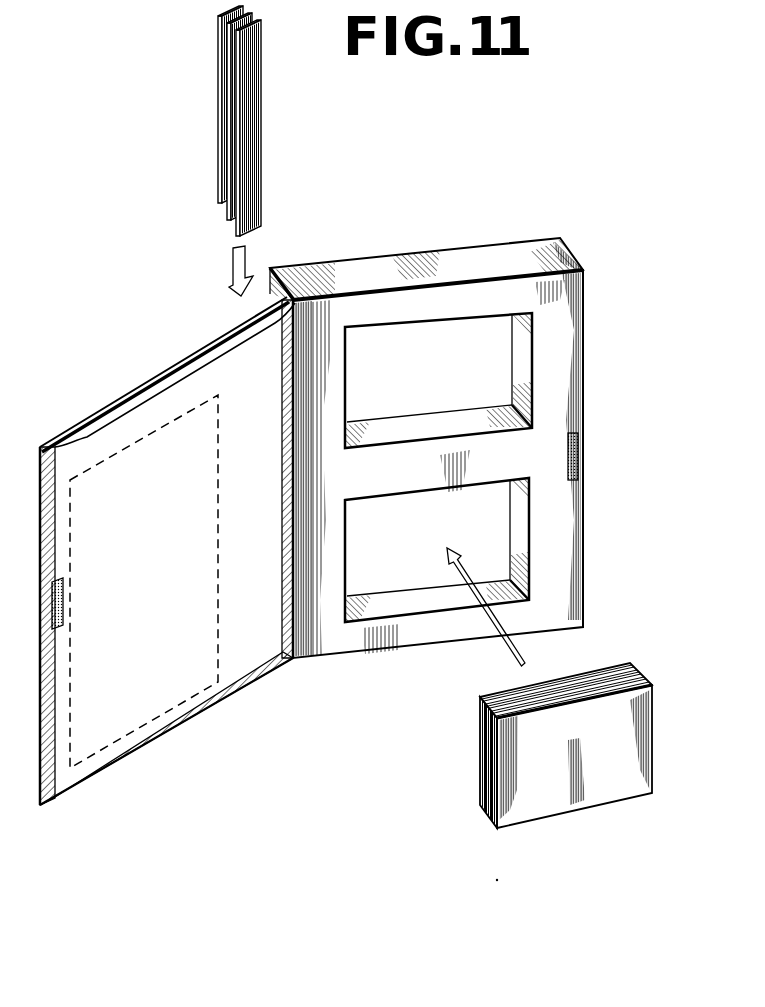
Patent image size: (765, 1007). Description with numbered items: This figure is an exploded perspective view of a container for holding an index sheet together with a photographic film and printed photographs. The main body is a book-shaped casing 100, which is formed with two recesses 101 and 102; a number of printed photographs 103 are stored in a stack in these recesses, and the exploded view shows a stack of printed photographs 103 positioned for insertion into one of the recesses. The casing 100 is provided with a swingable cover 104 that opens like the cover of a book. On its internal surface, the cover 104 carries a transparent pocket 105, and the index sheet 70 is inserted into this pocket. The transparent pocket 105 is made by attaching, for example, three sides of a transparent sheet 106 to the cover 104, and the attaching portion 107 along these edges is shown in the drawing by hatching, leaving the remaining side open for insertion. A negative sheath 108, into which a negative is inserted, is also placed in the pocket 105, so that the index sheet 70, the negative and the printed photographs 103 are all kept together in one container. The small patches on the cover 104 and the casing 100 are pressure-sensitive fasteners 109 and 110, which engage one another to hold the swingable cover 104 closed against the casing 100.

The index sheet 70 is at (150, 738).
The book-shaped casing 100 is at (507, 268).
The recess 101 is at (412, 347).
The recess 102 is at (400, 565).
The printed photographs 103 is at (563, 785).
The swingable cover 104 is at (169, 565).
The transparent pocket 105 is at (175, 378).
The transparent sheet 106 is at (247, 630).
The attaching portion 107 is at (100, 770).
The negative sheath 108 is at (270, 124).
The pressure-sensitive fastener 109 is at (580, 456).
The pressure-sensitive fastener 110 is at (64, 598).